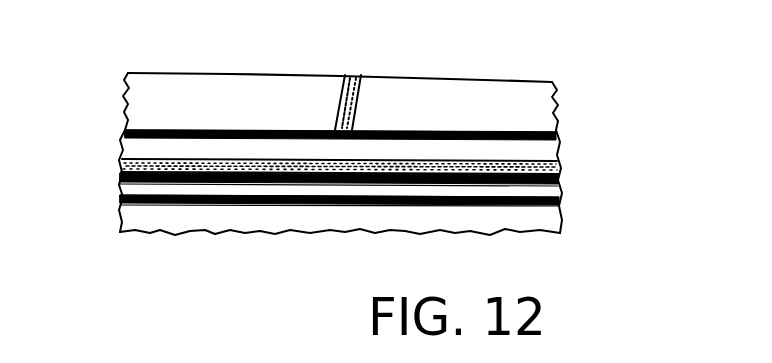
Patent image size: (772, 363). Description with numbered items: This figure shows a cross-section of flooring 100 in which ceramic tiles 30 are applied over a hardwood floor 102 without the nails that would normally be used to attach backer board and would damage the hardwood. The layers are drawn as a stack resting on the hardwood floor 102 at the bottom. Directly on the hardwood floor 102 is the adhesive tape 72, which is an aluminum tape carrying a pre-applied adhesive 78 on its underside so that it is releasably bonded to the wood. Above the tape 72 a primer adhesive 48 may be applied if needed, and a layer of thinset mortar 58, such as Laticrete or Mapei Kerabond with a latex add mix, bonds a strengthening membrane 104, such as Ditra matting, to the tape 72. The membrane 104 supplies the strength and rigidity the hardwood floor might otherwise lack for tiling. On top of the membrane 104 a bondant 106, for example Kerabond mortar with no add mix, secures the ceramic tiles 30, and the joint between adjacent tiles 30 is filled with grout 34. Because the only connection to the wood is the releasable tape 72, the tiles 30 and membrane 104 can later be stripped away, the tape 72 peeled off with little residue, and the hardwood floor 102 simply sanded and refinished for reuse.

The flooring 100 is at (567, 56).
The ceramic tiles 30 is at (250, 115).
The grout 34 is at (357, 73).
The strengthening membrane 104 is at (557, 153).
The bondant 106 is at (124, 130).
The thinset mortar 58 is at (557, 170).
The primer adhesive 48 is at (125, 178).
The adhesive tape 72 is at (549, 190).
The adhesive 78 is at (557, 207).
The hardwood floor 102 is at (201, 230).